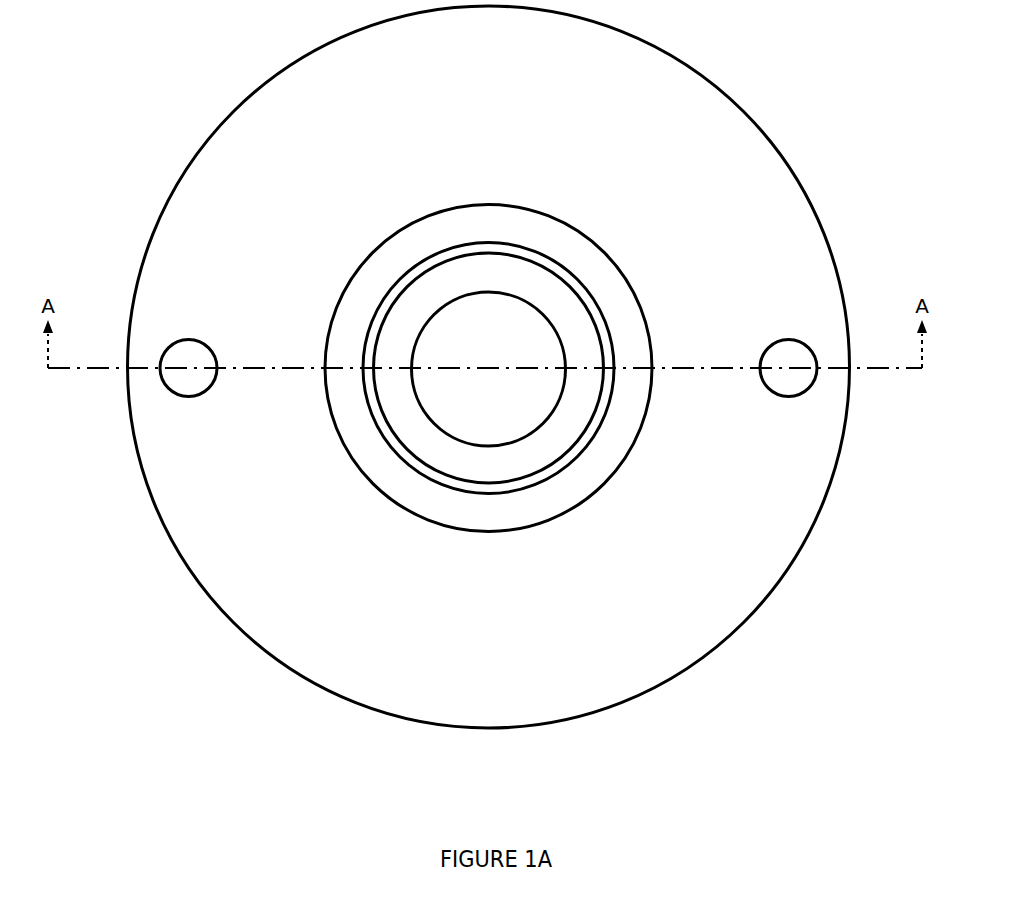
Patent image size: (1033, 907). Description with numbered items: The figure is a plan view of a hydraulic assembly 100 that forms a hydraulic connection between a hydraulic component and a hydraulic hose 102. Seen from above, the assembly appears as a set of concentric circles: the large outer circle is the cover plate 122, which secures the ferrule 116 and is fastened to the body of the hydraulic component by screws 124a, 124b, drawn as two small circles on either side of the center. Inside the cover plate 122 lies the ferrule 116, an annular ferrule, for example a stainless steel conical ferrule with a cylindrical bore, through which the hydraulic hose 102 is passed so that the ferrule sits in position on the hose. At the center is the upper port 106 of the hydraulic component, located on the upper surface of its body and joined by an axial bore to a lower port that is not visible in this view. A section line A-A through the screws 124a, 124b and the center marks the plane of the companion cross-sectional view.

The hydraulic assembly 100 is at (490, 367).
The hydraulic hose 102 is at (587, 330).
The upper port 106 is at (492, 383).
The ferrule 116 is at (603, 262).
The cover plate 122 is at (182, 205).
The screw 124a is at (173, 378).
The screw 124b is at (807, 377).